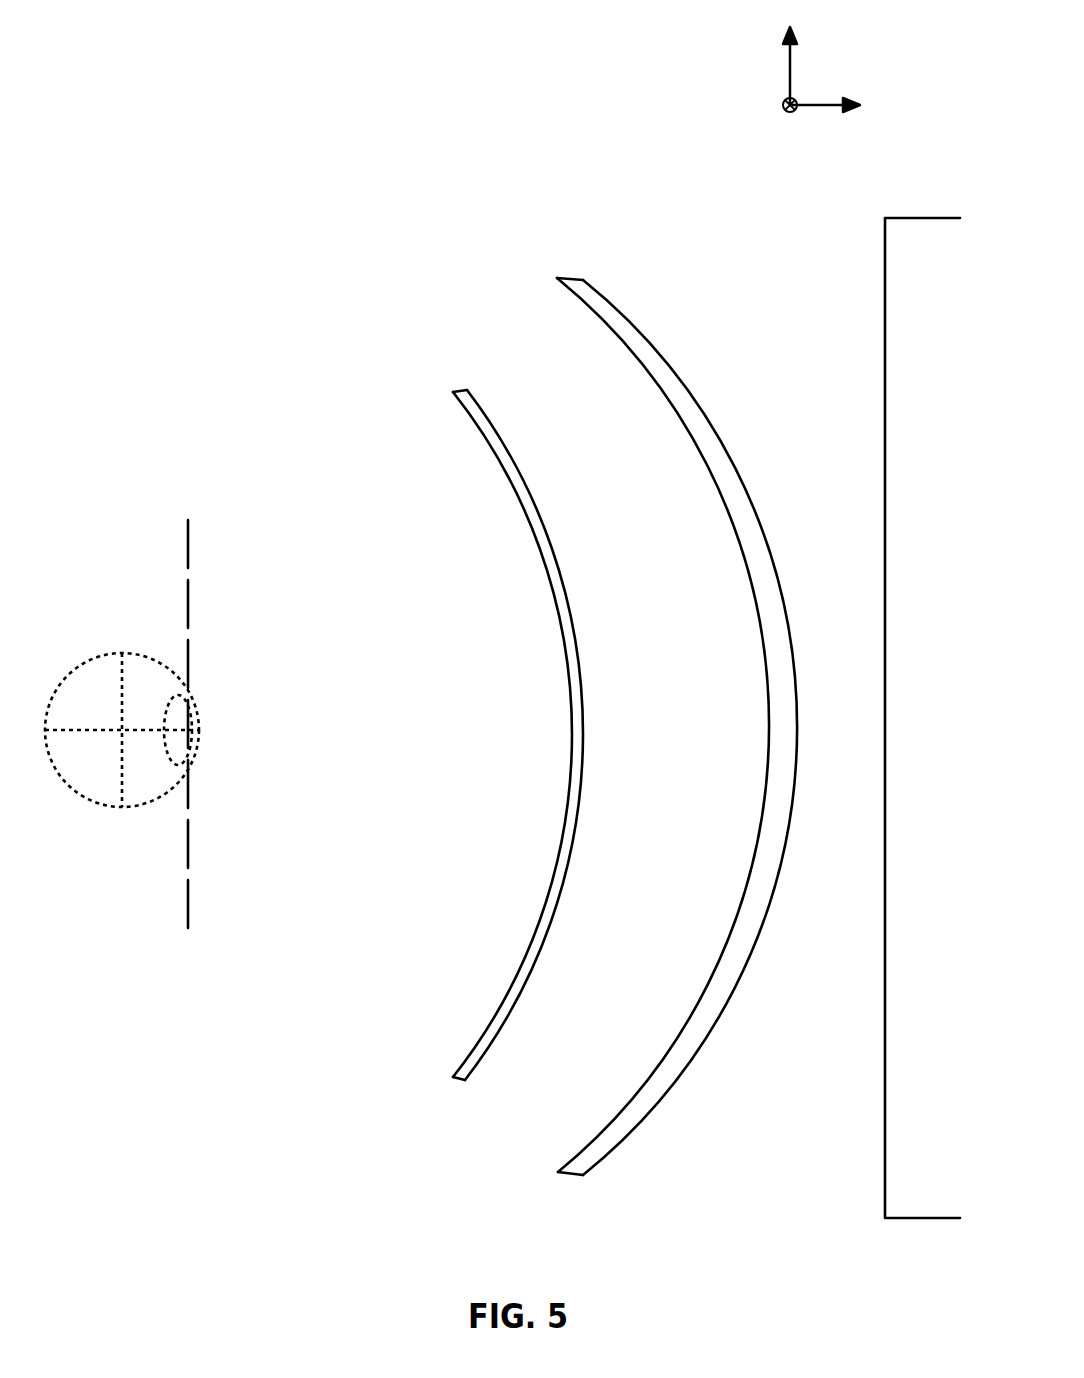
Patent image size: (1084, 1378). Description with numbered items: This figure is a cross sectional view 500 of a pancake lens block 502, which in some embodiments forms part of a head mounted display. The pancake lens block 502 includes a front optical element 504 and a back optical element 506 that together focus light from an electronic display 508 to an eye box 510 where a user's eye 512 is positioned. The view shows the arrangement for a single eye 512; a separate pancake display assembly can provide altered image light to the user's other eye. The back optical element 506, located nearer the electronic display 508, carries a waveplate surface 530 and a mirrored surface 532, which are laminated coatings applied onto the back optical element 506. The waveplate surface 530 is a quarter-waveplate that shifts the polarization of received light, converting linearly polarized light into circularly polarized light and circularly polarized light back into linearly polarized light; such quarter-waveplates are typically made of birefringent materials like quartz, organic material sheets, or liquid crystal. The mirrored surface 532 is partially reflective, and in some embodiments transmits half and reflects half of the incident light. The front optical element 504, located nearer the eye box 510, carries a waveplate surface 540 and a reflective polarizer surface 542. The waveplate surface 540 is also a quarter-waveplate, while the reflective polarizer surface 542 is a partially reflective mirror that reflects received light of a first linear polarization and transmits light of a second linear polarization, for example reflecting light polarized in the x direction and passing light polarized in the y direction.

The cross sectional view 500 is at (77, 65).
The pancake lens block 502 is at (440, 400).
The front optical element 504 is at (453, 394).
The back optical element 506 is at (583, 279).
The electronic display 508 is at (885, 272).
The eye box 510 is at (190, 932).
The eye 512 is at (121, 653).
The waveplate surface 530 is at (694, 1057).
The mirrored surface 532 is at (700, 998).
The waveplate surface 540 is at (483, 1057).
The reflective polarizer surface 542 is at (482, 1035).